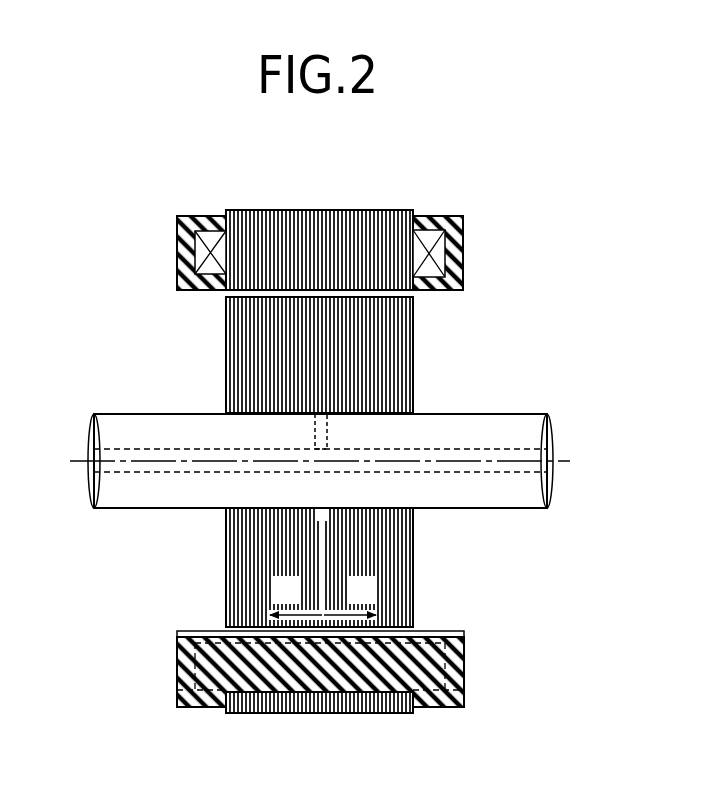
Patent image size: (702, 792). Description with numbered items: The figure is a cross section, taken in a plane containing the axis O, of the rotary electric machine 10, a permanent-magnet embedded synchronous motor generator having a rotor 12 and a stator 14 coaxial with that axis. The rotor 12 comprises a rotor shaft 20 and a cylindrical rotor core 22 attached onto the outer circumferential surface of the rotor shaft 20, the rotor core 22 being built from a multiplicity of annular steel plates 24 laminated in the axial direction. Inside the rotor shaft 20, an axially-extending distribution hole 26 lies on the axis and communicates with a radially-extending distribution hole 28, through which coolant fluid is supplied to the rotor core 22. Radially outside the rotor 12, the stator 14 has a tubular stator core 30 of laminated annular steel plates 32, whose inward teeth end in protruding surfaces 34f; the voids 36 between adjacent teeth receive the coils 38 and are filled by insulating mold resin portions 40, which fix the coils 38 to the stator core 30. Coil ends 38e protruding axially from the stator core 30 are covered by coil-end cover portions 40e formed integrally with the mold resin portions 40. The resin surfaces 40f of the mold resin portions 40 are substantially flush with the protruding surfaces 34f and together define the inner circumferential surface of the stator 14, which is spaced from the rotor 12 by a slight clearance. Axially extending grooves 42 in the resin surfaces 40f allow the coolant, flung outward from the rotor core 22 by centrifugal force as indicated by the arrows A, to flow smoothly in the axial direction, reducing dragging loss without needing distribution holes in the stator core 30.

The rotary electric machine 10 is at (512, 218).
The rotor 12 is at (212, 548).
The stator 14 is at (236, 204).
The rotor shaft 20 is at (478, 425).
The rotor core 22 is at (334, 361).
The steel plates 24 is at (250, 342).
The axially-extending distribution hole 26 is at (468, 466).
The radially-extending distribution hole 28 is at (322, 413).
The stator core 30 is at (334, 259).
The steel plates 32 is at (283, 240).
The protruding surfaces 34f is at (384, 297).
The voids 36 is at (340, 700).
The coils 38 is at (208, 700).
The coil ends 38e is at (430, 240).
The mold resin portions 40 is at (291, 672).
The coil-end cover portions 40e is at (182, 262).
The resin surfaces 40f is at (206, 632).
The grooves 42 is at (440, 632).